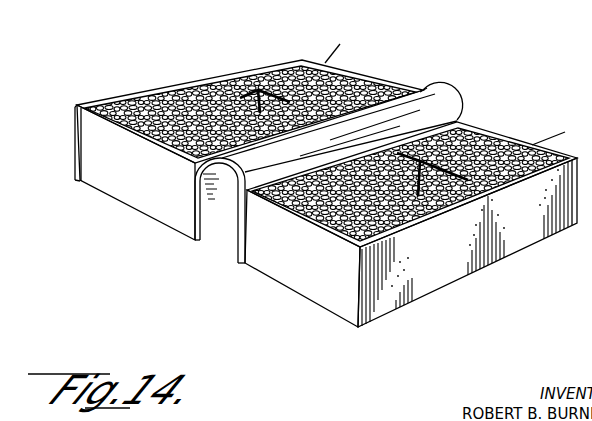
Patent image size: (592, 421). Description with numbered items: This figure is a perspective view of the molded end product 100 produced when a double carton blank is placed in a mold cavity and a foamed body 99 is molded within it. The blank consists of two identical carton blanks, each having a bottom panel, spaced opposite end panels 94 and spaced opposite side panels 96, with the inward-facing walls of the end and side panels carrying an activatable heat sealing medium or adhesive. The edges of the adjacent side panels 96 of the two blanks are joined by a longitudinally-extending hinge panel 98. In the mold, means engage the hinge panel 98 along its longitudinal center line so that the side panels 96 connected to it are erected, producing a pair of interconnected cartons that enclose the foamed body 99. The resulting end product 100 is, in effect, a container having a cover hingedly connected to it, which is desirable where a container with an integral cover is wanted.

The end panel 94 is at (128, 195).
The side panel 96 is at (170, 87).
The hinge panel 98 is at (440, 98).
The foamed body 99 is at (255, 78).
The end product 100 is at (478, 37).